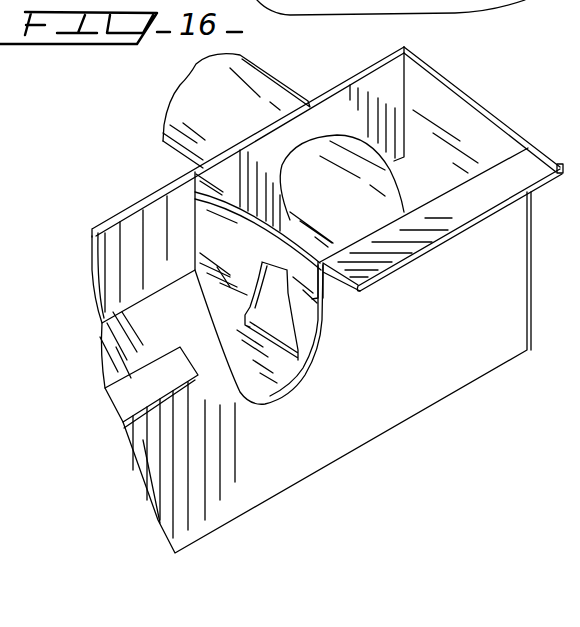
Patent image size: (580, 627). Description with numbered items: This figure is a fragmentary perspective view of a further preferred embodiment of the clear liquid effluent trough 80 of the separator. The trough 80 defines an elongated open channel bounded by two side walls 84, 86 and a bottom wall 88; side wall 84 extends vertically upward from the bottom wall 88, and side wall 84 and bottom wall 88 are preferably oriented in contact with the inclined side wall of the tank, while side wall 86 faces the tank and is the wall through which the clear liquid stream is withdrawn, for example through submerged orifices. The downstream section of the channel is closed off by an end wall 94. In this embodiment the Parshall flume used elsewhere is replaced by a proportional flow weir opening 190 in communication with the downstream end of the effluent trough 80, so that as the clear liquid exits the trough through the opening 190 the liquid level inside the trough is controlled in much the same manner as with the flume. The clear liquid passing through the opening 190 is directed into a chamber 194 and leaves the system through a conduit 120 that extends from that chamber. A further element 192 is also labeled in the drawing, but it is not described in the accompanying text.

The effluent trough 80 is at (135, 203).
The side wall 84 is at (110, 256).
The side wall 86 is at (153, 440).
The bottom wall 88 is at (123, 345).
The end wall 94 is at (452, 105).
The conduit 120 is at (247, 75).
The proportional flow weir opening 190 is at (283, 338).
The cable 192 is at (453, 0).
The chamber 194 is at (408, 176).